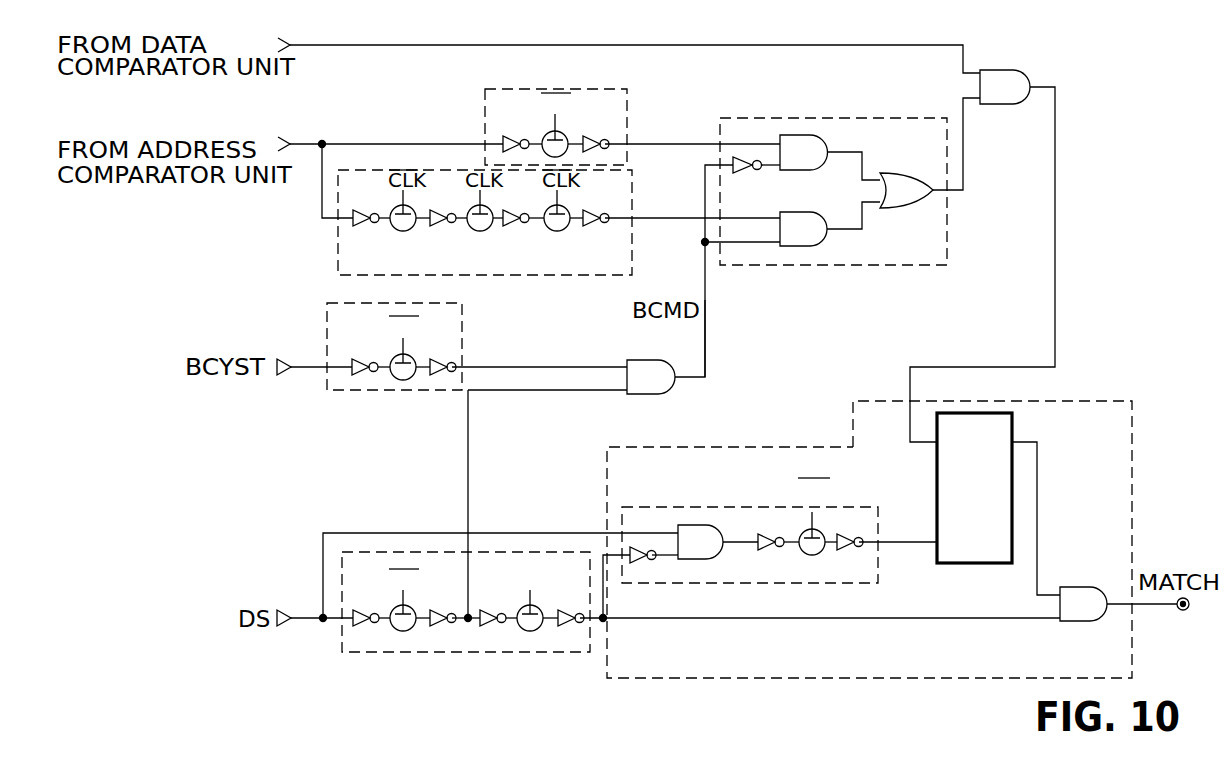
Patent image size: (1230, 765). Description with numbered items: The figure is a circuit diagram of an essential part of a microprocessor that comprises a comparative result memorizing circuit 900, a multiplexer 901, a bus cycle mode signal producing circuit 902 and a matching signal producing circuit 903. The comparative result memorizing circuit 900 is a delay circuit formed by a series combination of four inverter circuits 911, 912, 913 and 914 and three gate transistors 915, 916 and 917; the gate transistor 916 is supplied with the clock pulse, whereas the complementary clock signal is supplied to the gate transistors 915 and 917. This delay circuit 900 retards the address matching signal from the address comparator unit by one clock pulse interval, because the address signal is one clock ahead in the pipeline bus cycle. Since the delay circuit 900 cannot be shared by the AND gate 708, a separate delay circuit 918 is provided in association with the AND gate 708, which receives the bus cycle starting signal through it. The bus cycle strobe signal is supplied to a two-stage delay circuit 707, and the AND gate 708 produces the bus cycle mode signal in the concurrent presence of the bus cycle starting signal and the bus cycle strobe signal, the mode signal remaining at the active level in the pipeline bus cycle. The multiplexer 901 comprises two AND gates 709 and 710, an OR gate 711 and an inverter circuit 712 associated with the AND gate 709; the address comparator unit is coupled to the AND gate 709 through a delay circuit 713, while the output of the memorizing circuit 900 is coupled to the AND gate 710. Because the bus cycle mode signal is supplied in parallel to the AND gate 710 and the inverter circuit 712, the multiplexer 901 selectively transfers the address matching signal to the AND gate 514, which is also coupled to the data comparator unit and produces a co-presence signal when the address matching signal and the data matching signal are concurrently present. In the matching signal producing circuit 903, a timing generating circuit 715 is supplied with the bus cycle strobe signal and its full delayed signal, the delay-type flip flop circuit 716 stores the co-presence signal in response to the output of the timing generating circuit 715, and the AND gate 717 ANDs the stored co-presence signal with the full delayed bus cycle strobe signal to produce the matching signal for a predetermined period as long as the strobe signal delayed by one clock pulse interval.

The AND gate 514 is at (1003, 68).
The delay circuit 713 is at (601, 89).
The AND gate 709 is at (801, 135).
The AND gate 710 is at (826, 242).
The OR gate 711 is at (900, 173).
The inverter circuit 712 is at (745, 176).
The multiplexer 901 is at (947, 243).
The inverter circuit 911 is at (363, 209).
The inverter circuit 912 is at (434, 228).
The inverter circuit 913 is at (512, 228).
The inverter circuit 914 is at (603, 225).
The gate transistor 915 is at (395, 231).
The gate transistor 916 is at (478, 232).
The gate transistor 917 is at (564, 231).
The comparative result memorizing circuit 900 is at (548, 275).
The delay circuit 918 is at (462, 330).
The bus cycle mode signal producing circuit 902 is at (712, 363).
The AND gate 708 is at (668, 394).
The matching signal producing circuit 903 is at (1085, 401).
The delay-type flip flop circuit 716 is at (1012, 418).
The timing generating circuit 715 is at (710, 507).
The AND gate 717 is at (1076, 587).
The two-stage delay circuit 707 is at (484, 652).